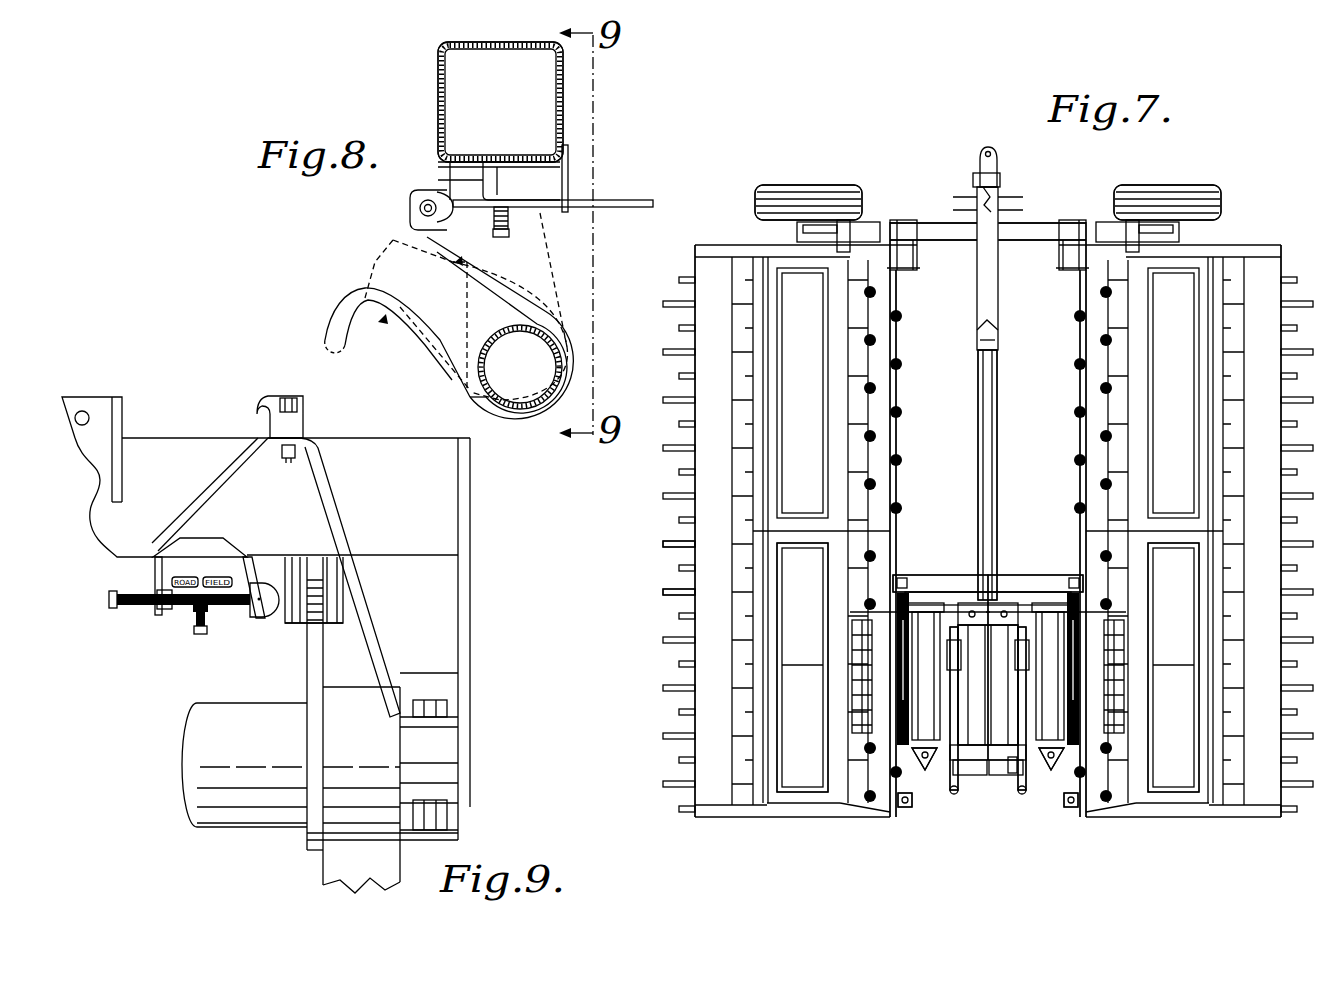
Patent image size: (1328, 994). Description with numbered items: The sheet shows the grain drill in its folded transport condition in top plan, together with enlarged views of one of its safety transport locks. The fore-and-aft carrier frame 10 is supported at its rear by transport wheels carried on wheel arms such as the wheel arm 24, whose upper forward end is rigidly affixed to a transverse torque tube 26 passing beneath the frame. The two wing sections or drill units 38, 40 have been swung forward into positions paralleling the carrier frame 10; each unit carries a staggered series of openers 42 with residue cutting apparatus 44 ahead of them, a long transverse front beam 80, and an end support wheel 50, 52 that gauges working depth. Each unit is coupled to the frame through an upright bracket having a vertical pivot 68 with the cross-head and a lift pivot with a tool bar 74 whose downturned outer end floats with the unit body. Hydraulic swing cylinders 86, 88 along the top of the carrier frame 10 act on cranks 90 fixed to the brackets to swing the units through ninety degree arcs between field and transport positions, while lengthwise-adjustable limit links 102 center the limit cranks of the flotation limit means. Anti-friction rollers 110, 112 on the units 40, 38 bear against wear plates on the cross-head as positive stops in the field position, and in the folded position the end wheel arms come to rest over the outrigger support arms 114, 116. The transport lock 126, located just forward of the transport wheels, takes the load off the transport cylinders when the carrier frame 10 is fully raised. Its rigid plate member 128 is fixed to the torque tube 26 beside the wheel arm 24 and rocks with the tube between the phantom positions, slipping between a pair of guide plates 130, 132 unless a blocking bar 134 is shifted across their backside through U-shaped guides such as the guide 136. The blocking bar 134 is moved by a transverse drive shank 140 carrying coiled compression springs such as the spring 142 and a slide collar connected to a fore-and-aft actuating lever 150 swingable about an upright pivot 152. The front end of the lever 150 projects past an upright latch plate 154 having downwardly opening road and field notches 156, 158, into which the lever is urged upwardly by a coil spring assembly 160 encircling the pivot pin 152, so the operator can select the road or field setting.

In FIG. 7, the carrier frame 10 is at (1015, 440).
In FIG. 9, the wheel arm 24 is at (340, 858).
In FIG. 8, the torque tube 26 is at (500, 405).
In FIG. 9, the torque tube 26 is at (263, 717).
In FIG. 7, the drill unit 38 is at (1306, 248).
In FIG. 7, the drill unit 40 is at (658, 570).
In FIG. 7, the openers 42 is at (662, 532).
In FIG. 7, the residue cutting apparatus 44 is at (892, 498).
In FIG. 7, the end support wheel 50 is at (1135, 185).
In FIG. 7, the end support wheel 52 is at (770, 185).
In FIG. 7, the vertical pivot 68 is at (925, 772).
In FIG. 7, the tool bar 74 is at (915, 612).
In FIG. 7, the front beam 80 is at (899, 528).
In FIG. 7, the swing cylinder 86 is at (1025, 765).
In FIG. 7, the swing cylinder 88 is at (953, 693).
In FIG. 7, the crank 90 is at (948, 792).
In FIG. 7, the limit link 102 is at (900, 690).
In FIG. 7, the anti-friction roller 110 is at (915, 798).
In FIG. 7, the anti-friction roller 112 is at (1065, 800).
In FIG. 7, the outrigger support arm 114 is at (1053, 237).
In FIG. 7, the outrigger support arm 116 is at (950, 236).
In FIG. 8, the transport lock 126 is at (412, 135).
In FIG. 9, the transport lock 126 is at (193, 518).
In FIG. 8, the plate member 128 is at (443, 330).
In FIG. 9, the plate member 128 is at (313, 647).
In FIG. 8, the guide plate 130 is at (445, 170).
In FIG. 9, the guide plate 130 is at (282, 565).
In FIG. 9, the guide plate 132 is at (353, 615).
In FIG. 9, the blocking bar 134 is at (270, 627).
In FIG. 8, the U-shaped guide 136 is at (410, 190).
In FIG. 8, the drive shank 140 is at (405, 222).
In FIG. 9, the compression spring 142 is at (130, 592).
In FIG. 8, the actuating lever 150 is at (607, 203).
In FIG. 8, the upright pivot 152 is at (507, 245).
In FIG. 9, the upright pivot 152 is at (202, 636).
In FIG. 9, the latch plate 154 is at (217, 553).
In FIG. 9, the notch 156 is at (140, 610).
In FIG. 9, the notch 158 is at (262, 615).
In FIG. 9, the coil spring assembly 160 is at (190, 612).